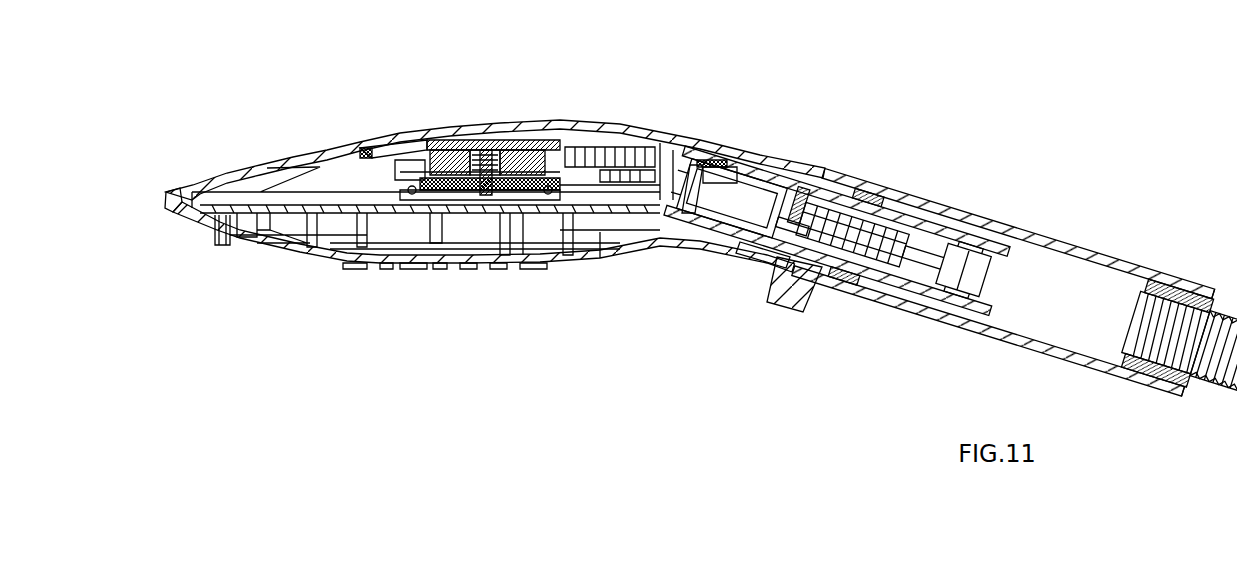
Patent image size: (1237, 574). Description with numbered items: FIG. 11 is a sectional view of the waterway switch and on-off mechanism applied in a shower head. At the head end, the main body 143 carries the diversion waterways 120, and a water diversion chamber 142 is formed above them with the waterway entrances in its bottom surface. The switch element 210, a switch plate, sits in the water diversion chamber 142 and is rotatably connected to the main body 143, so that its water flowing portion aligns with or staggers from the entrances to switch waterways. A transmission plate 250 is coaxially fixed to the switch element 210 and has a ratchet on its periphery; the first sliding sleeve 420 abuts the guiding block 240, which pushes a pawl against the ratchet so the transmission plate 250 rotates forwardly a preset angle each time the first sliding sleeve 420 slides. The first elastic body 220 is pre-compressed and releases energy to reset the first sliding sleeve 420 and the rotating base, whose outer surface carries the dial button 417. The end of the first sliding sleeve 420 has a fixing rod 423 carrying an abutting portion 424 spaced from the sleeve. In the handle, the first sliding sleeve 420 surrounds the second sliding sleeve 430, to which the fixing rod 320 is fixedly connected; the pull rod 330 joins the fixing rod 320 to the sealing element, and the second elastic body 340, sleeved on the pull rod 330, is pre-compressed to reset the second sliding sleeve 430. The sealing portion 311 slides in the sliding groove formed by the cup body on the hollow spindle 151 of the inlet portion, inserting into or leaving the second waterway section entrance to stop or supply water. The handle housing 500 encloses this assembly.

The diversion waterway 120 is at (407, 265).
The water diversion chamber 142 is at (440, 173).
The main body 143 is at (345, 262).
The spindle 151 is at (1125, 285).
The switch element 210 is at (467, 268).
The first elastic body 220 is at (599, 273).
The guiding block 240 is at (565, 290).
The transmission plate 250 is at (460, 163).
The sealing portion 311 is at (955, 240).
The fixing rod 320 is at (800, 180).
The pull rod 330 is at (842, 215).
The second elastic body 340 is at (872, 205).
The dial button 417 is at (803, 312).
The first sliding sleeve 420 is at (775, 160).
The fixing rod 423 is at (695, 150).
The abutting portion 424 is at (672, 185).
The second sliding sleeve 430 is at (765, 255).
The handle housing 500 is at (1058, 238).